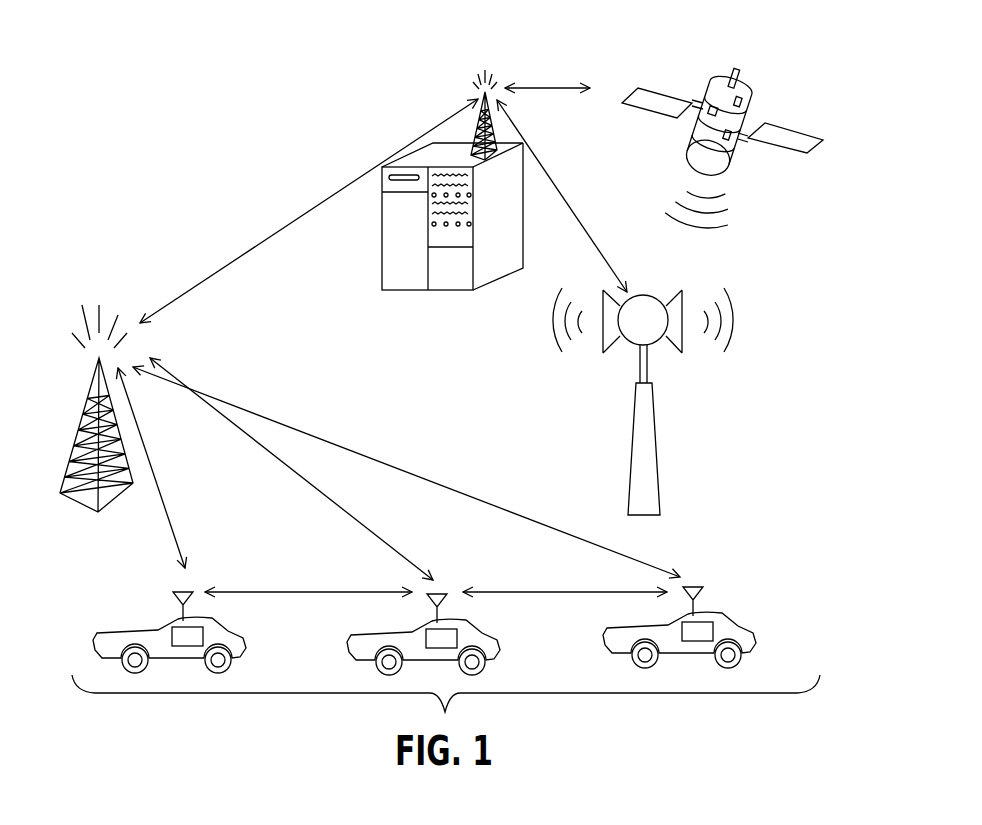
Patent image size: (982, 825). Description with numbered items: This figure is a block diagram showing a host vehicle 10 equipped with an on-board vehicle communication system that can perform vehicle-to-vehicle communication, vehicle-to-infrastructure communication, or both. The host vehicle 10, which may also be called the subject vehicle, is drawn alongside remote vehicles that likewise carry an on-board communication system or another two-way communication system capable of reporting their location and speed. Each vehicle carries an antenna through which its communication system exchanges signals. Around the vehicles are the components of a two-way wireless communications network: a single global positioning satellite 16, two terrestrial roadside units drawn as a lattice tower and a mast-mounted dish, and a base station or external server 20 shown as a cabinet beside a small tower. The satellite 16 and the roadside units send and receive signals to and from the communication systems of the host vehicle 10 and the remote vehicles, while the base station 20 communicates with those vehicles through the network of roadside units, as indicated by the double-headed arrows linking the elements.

The host vehicle 10 is at (365, 632).
The global positioning satellite 16 is at (710, 68).
The base station 20 is at (375, 236).